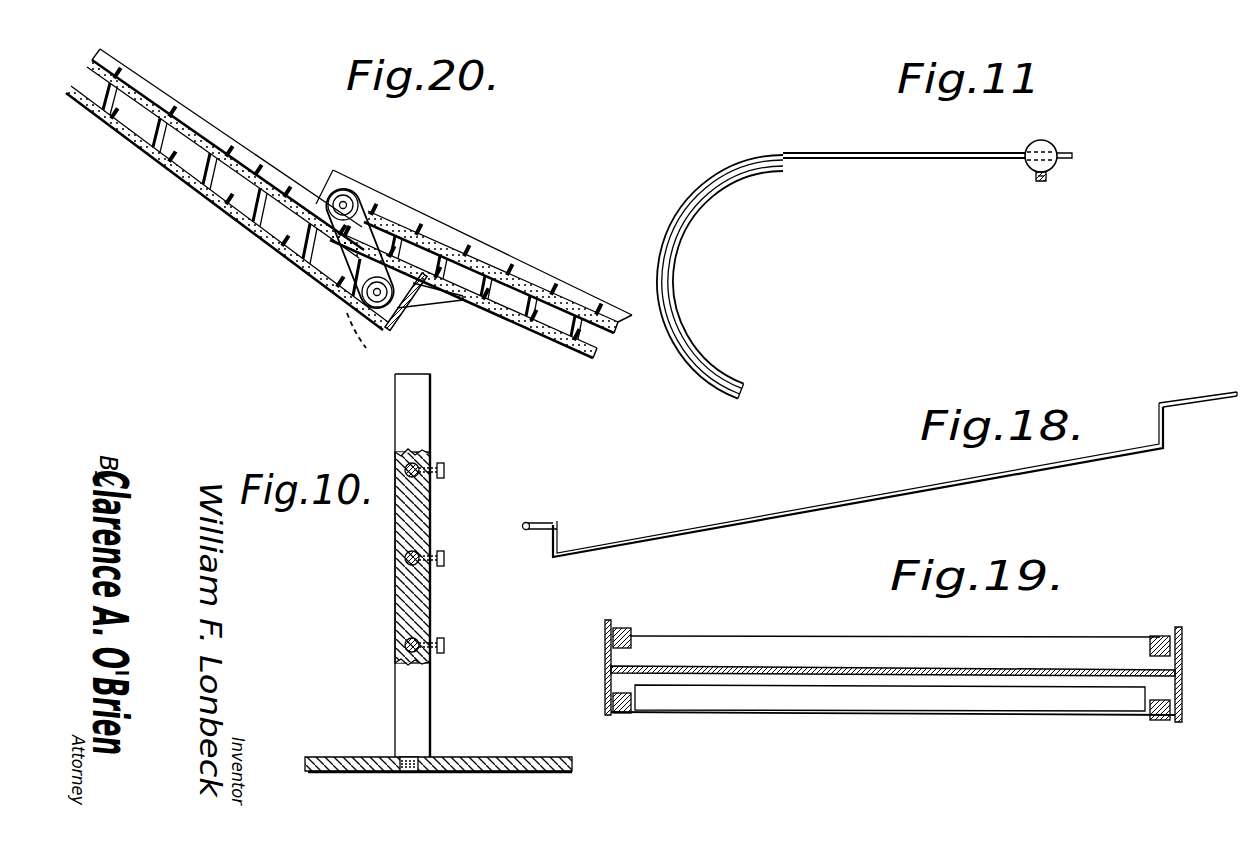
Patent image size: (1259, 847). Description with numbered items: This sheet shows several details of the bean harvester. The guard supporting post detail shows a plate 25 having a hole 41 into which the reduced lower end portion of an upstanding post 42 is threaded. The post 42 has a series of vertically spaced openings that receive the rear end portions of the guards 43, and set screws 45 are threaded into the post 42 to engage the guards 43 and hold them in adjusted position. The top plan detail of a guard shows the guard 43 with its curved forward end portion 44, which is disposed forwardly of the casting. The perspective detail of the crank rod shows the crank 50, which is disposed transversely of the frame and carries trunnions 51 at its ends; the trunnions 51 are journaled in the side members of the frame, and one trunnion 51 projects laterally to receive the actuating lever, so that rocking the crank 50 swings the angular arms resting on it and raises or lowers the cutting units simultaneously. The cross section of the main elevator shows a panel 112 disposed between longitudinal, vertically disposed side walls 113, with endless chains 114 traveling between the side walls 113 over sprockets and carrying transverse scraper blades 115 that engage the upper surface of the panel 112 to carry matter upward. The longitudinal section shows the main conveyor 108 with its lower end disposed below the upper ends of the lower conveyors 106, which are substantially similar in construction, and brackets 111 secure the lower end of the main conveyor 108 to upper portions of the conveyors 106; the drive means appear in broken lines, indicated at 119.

In FIG. 20, the lower conveyor 106 is at (477, 228).
In FIG. 20, the main conveyor 108 is at (203, 115).
In FIG. 19, the main conveyor 108 is at (948, 722).
In FIG. 20, the bracket 111 is at (437, 300).
In FIG. 20, the panel 112 is at (210, 167).
In FIG. 19, the panel 112 is at (790, 667).
In FIG. 20, the side wall 113 is at (220, 143).
In FIG. 19, the side wall 113 is at (605, 647).
In FIG. 20, the endless chain 114 is at (257, 178).
In FIG. 19, the endless chain 114 is at (622, 628).
In FIG. 20, the scraper blade 115 is at (165, 112).
In FIG. 19, the scraper blade 115 is at (690, 695).
In FIG. 20, the pivot link 119 is at (373, 341).
In FIG. 11, the post 42 is at (1040, 158).
In FIG. 10, the post 42 is at (425, 419).
In FIG. 11, the guard 43 is at (872, 143).
In FIG. 10, the guard 43 is at (404, 474).
In FIG. 11, the curved forward end portion 44 is at (663, 307).
In FIG. 11, the set screw 45 is at (1040, 181).
In FIG. 10, the set screw 45 is at (447, 470).
In FIG. 10, the plate 25 is at (482, 758).
In FIG. 10, the hole 41 is at (400, 772).
In FIG. 18, the crank 50 is at (780, 520).
In FIG. 18, the trunnion 51 is at (548, 523).